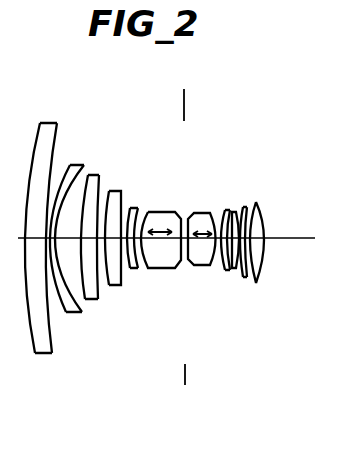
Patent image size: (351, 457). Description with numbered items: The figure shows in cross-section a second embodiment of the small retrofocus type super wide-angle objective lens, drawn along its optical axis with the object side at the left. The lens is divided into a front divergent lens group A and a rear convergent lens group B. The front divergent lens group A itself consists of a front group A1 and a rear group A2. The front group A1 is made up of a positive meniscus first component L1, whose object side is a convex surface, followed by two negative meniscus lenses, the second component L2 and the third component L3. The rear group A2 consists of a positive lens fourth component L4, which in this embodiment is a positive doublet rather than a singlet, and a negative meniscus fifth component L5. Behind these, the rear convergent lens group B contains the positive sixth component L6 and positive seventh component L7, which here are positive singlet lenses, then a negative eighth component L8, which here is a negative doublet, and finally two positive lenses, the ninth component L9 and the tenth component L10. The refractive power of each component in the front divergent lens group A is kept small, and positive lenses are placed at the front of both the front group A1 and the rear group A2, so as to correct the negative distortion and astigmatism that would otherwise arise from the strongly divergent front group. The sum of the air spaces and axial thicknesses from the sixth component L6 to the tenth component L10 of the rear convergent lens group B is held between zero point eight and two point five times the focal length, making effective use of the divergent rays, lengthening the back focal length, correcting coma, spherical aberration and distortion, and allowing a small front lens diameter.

The positive meniscus first component L1 is at (52, 122).
The negative meniscus second component L2 is at (77, 163).
The negative meniscus third component L3 is at (98, 173).
The positive lens fourth component L4 is at (125, 186).
The negative meniscus fifth component L5 is at (139, 207).
The positive lens sixth component L6 is at (160, 212).
The positive lens seventh component L7 is at (201, 212).
The negative lens eighth component L8 is at (239, 204).
The positive ninth component L9 is at (247, 206).
The positive tenth component L10 is at (256, 224).
The front divergent lens group A is at (140, 403).
The front group A1 is at (102, 358).
The rear group A2 is at (140, 294).
The rear convergent lens group B is at (262, 294).